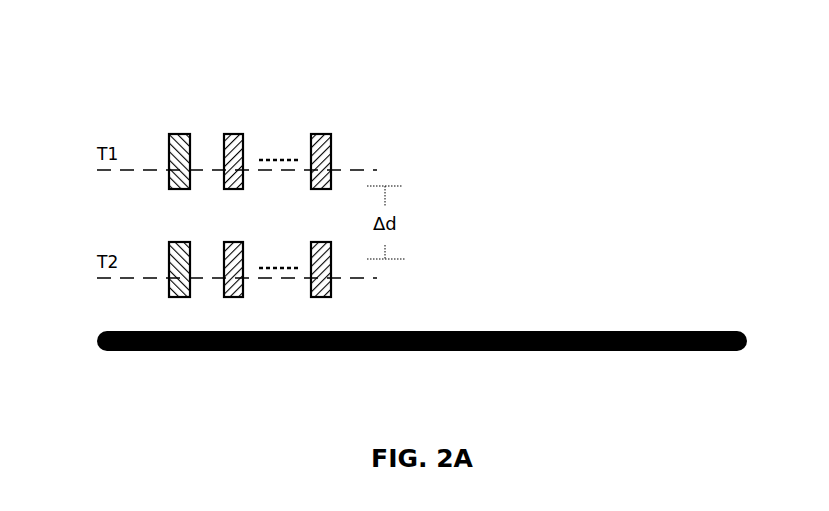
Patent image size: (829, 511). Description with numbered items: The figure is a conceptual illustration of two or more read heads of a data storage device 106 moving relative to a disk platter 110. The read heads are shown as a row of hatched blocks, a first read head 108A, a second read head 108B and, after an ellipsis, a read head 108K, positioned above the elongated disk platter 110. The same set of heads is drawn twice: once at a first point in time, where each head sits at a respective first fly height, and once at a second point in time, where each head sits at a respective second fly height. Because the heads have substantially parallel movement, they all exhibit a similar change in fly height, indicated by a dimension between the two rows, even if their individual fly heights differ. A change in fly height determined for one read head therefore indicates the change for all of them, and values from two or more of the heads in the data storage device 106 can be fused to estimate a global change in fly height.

The data storage device 106 is at (134, 63).
The first read head 108A is at (179, 133).
The second read head 108B is at (242, 137).
The read head 108K is at (331, 150).
The disk platter 110 is at (650, 331).